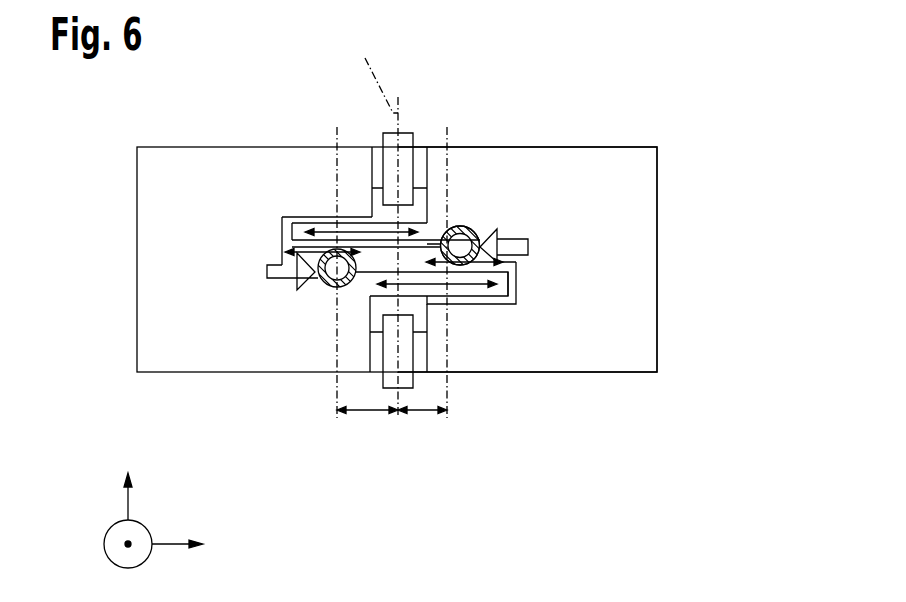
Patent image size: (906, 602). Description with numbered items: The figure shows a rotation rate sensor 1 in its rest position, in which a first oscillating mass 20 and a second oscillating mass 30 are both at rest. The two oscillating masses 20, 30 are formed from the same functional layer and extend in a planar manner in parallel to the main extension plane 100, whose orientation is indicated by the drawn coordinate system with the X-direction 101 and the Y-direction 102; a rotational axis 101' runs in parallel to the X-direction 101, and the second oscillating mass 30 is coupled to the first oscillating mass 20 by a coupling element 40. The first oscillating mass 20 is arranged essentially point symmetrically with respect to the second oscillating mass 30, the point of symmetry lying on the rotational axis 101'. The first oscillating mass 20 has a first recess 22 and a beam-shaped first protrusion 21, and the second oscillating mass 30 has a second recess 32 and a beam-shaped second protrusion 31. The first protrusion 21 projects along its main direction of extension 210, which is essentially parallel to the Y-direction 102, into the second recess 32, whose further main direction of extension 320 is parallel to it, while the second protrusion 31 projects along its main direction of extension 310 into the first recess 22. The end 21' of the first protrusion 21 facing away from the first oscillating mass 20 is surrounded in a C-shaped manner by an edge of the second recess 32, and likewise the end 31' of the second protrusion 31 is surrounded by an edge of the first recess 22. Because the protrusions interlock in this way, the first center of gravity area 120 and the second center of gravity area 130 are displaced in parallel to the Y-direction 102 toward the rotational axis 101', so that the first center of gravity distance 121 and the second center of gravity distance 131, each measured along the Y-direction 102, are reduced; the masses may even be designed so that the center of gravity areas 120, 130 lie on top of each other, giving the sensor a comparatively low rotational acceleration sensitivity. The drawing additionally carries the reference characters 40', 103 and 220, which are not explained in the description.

The rotation rate sensor 1 is at (716, 84).
The first oscillating mass 20 is at (160, 167).
The first protrusion 21 is at (464, 332).
The end of first protrusion 21' is at (561, 360).
The first recess 22 is at (283, 240).
The second oscillating mass 30 is at (632, 167).
The second protrusion 31 is at (361, 130).
The end of second protrusion 31' is at (360, 159).
The second recess 32 is at (516, 284).
The coupling element 40 is at (420, 147).
The second plunger 40' is at (347, 372).
The main extension plane 100 is at (160, 517).
The X-direction 101 is at (101, 487).
The rotational axis 101' is at (371, 221).
The Y-direction 102 is at (193, 564).
The third axis direction 103 is at (128, 544).
The first center of gravity area 120 is at (281, 278).
The first center of gravity distance 121 is at (358, 414).
The second center of gravity area 130 is at (508, 240).
The second center of gravity distance 131 is at (413, 414).
The main direction of extension of first protrusion 210 is at (470, 288).
The sealing ring movement 220 is at (307, 240).
The main direction of extension of second protrusion 310 is at (331, 230).
The further second main direction of extension 320 is at (471, 235).